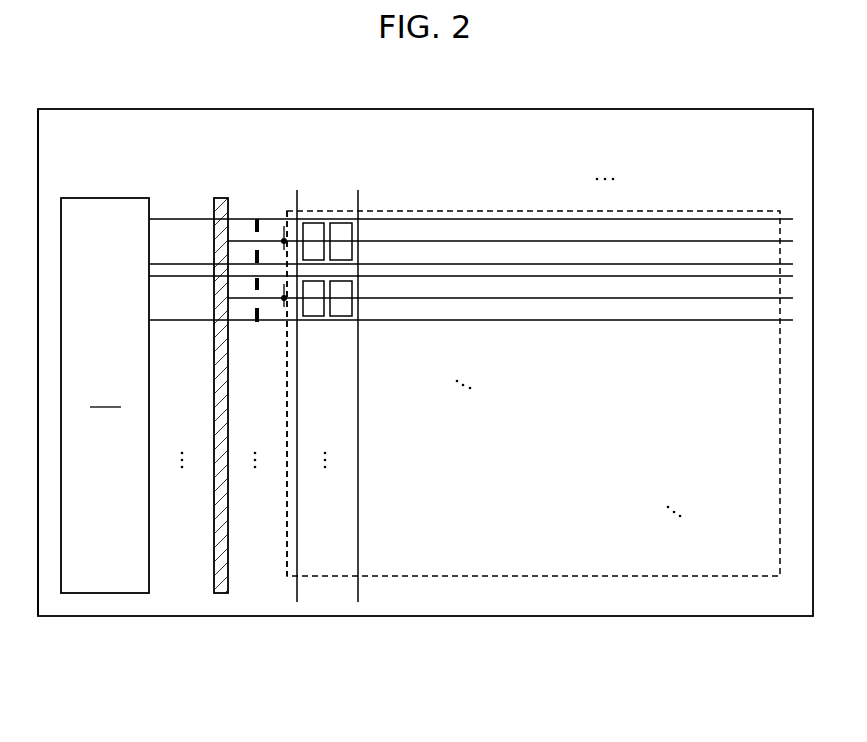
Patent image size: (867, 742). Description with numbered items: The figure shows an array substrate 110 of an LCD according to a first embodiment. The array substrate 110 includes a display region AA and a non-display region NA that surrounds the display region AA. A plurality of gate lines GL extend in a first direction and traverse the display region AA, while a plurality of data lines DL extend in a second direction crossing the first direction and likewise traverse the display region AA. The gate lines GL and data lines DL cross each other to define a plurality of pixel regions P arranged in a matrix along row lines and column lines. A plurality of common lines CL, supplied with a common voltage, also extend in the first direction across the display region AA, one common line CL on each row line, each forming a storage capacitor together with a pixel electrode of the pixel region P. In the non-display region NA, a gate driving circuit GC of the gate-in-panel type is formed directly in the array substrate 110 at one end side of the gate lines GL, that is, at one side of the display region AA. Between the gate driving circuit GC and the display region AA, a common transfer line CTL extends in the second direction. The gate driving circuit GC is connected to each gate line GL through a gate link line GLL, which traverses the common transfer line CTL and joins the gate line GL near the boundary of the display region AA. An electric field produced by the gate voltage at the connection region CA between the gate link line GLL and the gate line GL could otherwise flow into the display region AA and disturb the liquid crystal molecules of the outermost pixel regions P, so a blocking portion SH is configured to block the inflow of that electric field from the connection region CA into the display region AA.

The array substrate 110 is at (480, 616).
The non-display region NA is at (126, 160).
The display region AA is at (685, 210).
The gate driving circuit GC is at (105, 395).
The gate link line GLL is at (181, 217).
The gate line GL is at (470, 216).
The common line CL is at (535, 240).
The common transfer line CTL is at (223, 594).
The connection region CA is at (257, 212).
The blocking portion SH is at (285, 226).
The data line DL is at (298, 205).
The pixel region P is at (312, 318).